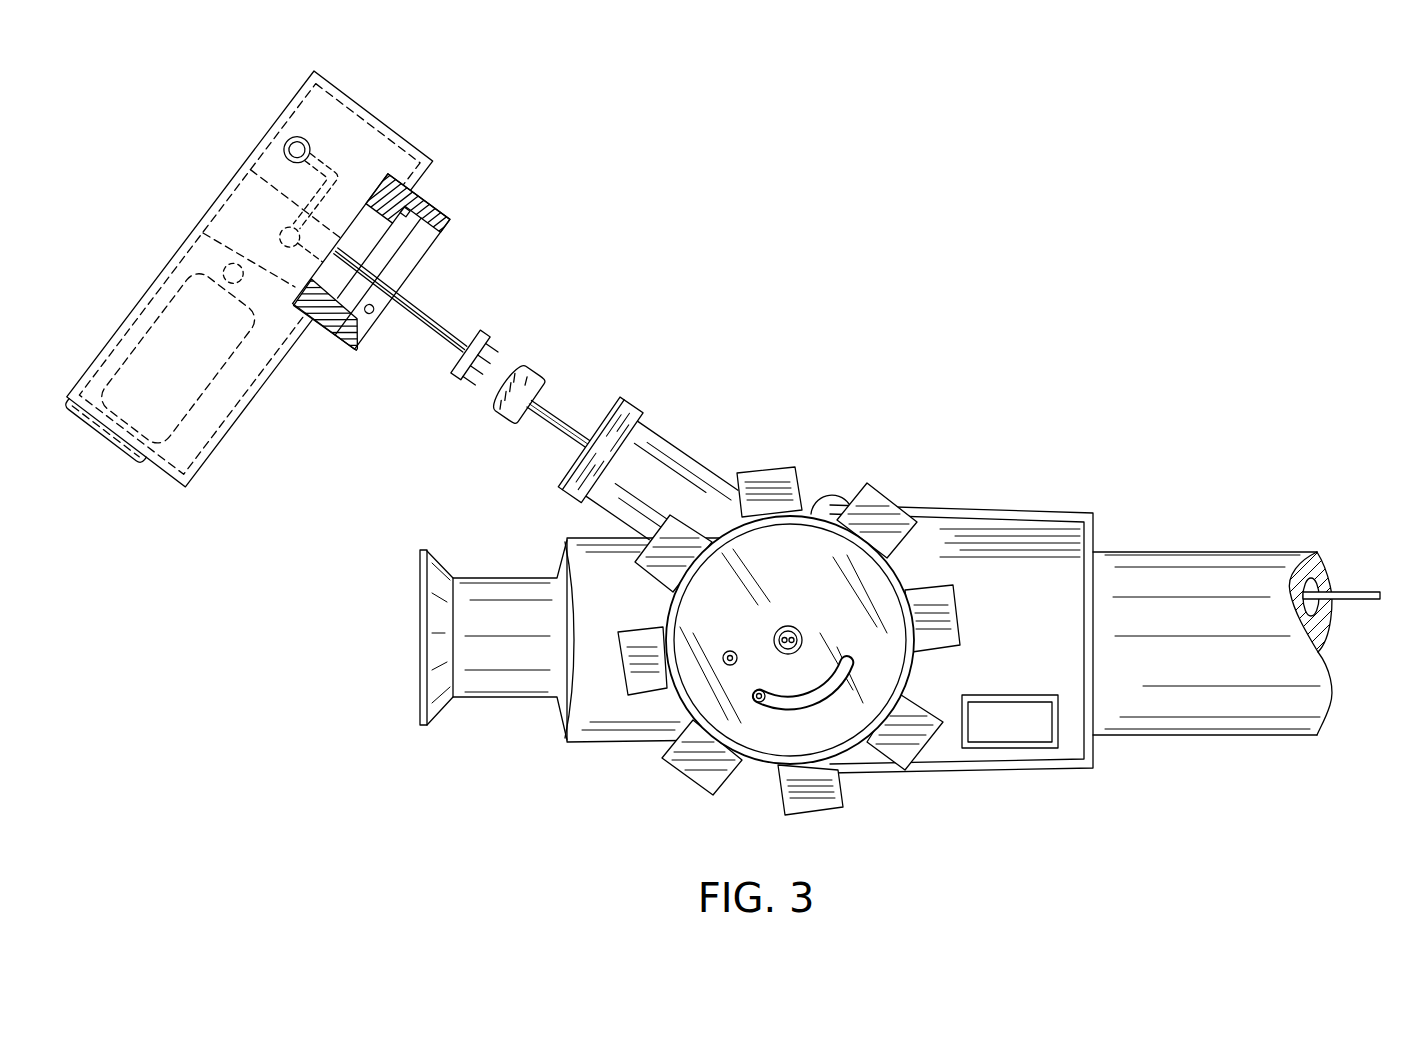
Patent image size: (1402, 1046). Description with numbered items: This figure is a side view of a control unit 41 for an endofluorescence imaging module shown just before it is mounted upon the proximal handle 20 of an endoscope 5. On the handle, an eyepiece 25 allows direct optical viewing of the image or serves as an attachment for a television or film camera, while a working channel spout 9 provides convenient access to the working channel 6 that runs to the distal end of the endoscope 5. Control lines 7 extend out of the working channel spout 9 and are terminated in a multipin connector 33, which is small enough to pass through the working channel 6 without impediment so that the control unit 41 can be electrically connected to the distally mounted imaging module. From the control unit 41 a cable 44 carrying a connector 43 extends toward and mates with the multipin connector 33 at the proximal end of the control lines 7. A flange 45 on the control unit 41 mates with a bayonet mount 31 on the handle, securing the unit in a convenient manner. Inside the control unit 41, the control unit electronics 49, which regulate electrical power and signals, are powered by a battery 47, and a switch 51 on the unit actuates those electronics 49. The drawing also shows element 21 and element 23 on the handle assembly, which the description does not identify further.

The endoscope 5 is at (1255, 552).
The working channel 6 is at (1313, 598).
The control lines 7 is at (567, 418).
The working channel spout 9 is at (688, 456).
The proximal handle 20 is at (904, 809).
The housing 21 is at (1013, 508).
The tab 23 is at (868, 484).
The eyepiece 25 is at (419, 637).
The bayonet mount 31 is at (632, 403).
The multipin connector 33 is at (530, 368).
The control unit 41 is at (419, 150).
The connector 43 is at (482, 342).
The cable 44 is at (433, 316).
The flange 45 is at (425, 228).
The battery 47 is at (156, 404).
The control unit electronics 49 is at (242, 249).
The switch 51 is at (294, 147).